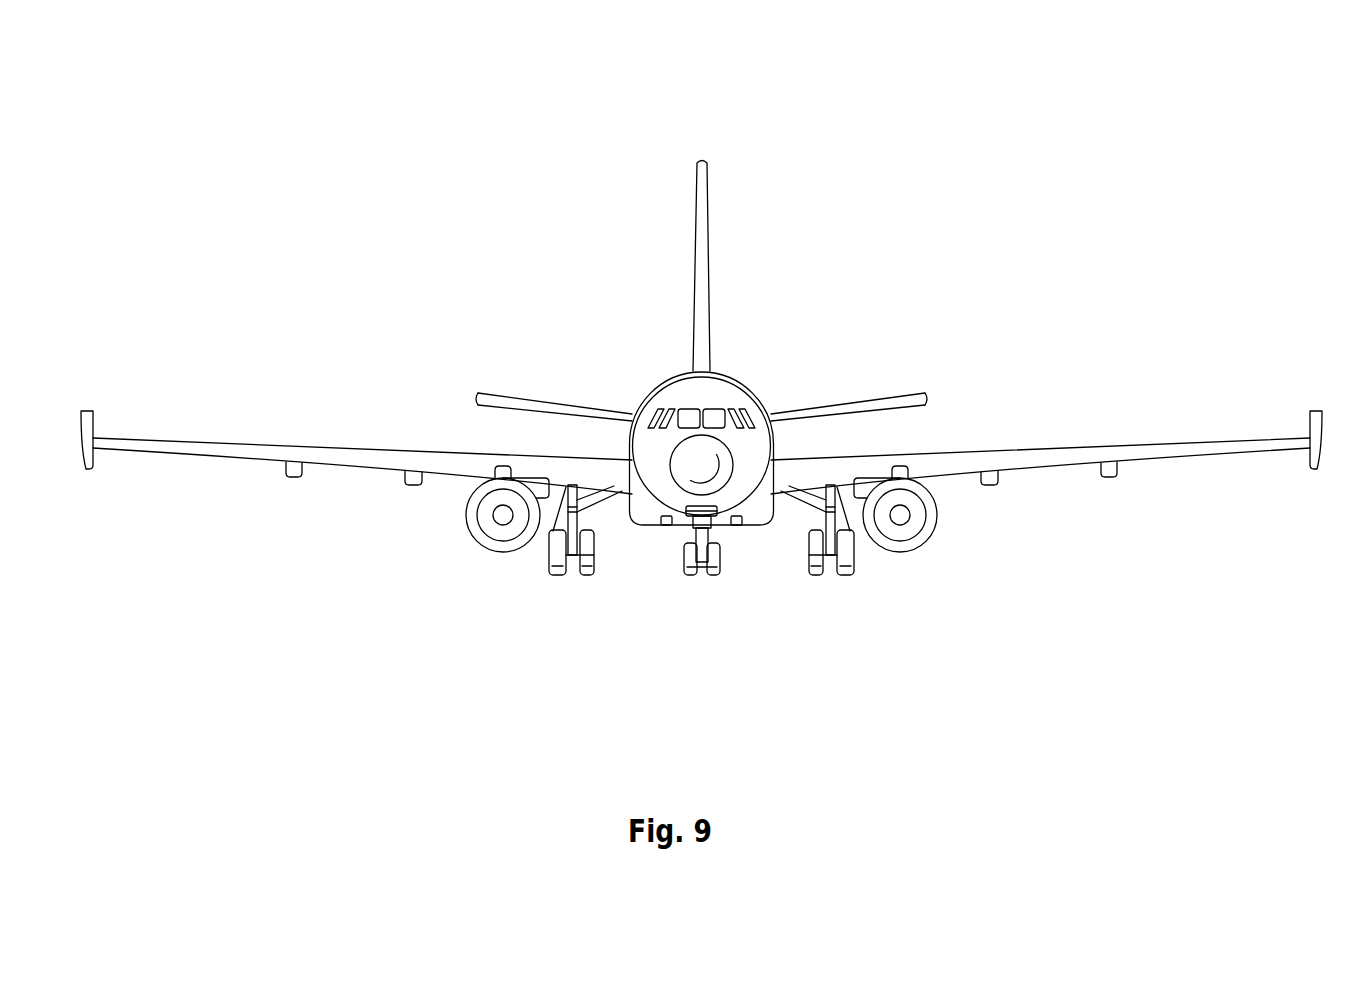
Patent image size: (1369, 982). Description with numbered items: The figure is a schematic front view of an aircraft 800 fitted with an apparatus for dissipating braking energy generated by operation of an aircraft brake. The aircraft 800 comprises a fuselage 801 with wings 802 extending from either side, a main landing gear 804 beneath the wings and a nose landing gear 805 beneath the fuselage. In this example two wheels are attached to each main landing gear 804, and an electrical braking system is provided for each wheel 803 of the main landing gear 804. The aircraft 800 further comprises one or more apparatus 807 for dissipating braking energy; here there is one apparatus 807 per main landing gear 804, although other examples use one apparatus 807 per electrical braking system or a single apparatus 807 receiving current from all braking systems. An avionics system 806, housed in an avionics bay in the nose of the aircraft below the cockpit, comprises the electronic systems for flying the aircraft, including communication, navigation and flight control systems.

The aircraft 800 is at (460, 140).
The fuselage 801 is at (730, 387).
The wings 802 is at (943, 459).
The wheel 803 is at (557, 555).
The main landing gear 804 is at (575, 522).
The nose landing gear 805 is at (702, 562).
The avionics system 806 is at (697, 443).
The apparatus for dissipating braking energy 807 is at (575, 522).